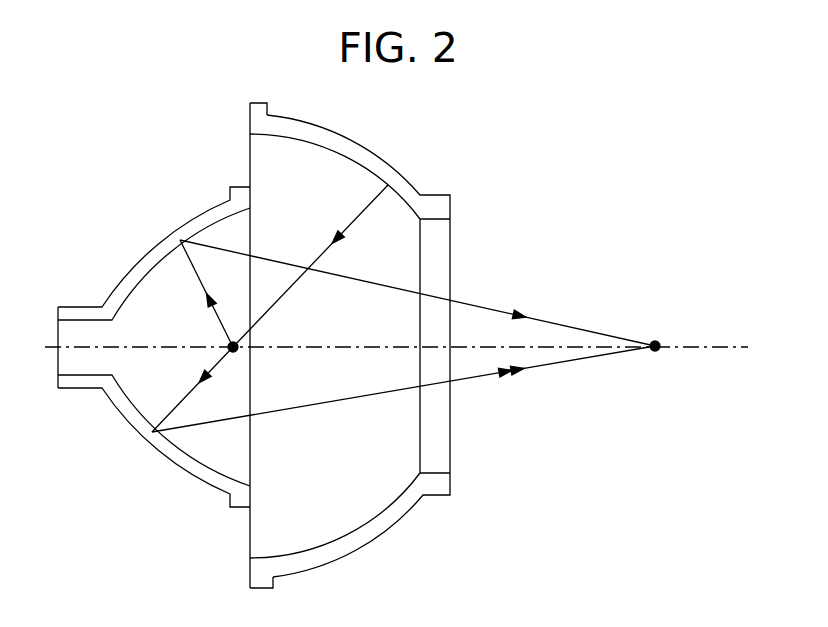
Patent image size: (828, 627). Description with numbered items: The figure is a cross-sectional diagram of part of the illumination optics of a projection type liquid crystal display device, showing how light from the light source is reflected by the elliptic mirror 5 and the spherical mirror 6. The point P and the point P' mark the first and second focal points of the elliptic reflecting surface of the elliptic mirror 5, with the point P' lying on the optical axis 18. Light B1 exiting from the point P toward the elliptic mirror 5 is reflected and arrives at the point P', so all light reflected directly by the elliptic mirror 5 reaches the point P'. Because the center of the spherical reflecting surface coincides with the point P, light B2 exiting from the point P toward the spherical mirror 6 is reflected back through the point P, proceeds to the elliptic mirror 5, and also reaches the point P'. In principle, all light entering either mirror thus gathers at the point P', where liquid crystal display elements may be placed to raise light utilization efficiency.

The elliptic mirror 5 is at (153, 244).
The spherical mirror 6 is at (352, 150).
The optical axis 18 is at (714, 338).
The light B1 is at (195, 282).
The light B2 is at (280, 302).
The point P is at (231, 364).
The point P' is at (652, 361).